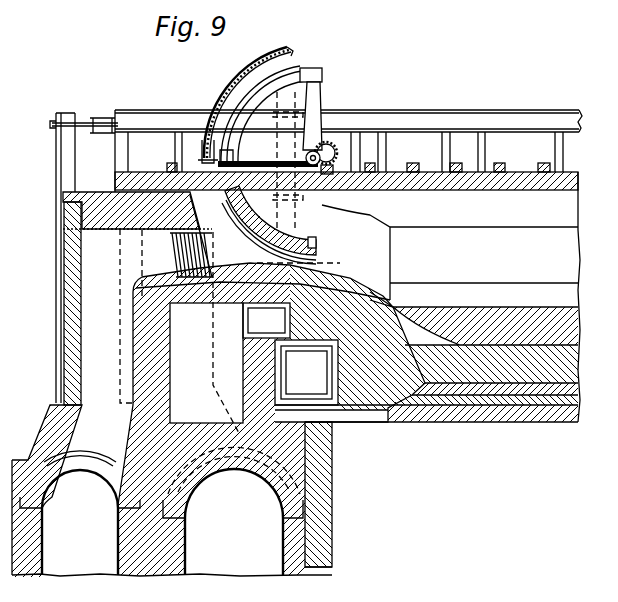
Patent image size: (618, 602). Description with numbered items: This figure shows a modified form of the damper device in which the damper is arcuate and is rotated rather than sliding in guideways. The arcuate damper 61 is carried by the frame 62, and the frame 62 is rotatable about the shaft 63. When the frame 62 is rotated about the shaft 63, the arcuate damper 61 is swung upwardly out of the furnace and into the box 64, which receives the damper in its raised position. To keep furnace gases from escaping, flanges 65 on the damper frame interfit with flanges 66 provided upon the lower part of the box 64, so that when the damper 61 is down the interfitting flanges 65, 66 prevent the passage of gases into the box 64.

The arcuate damper 61 is at (252, 234).
The frame 62 is at (313, 70).
The shaft 63 is at (322, 148).
The box 64 is at (250, 64).
The flanges on the damper frame 65 is at (203, 152).
The flanges on the lower part of the box 66 is at (243, 200).